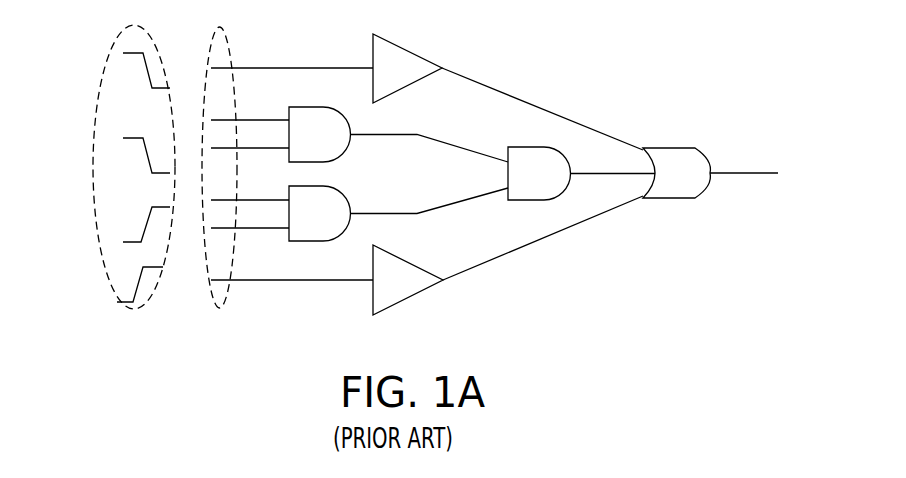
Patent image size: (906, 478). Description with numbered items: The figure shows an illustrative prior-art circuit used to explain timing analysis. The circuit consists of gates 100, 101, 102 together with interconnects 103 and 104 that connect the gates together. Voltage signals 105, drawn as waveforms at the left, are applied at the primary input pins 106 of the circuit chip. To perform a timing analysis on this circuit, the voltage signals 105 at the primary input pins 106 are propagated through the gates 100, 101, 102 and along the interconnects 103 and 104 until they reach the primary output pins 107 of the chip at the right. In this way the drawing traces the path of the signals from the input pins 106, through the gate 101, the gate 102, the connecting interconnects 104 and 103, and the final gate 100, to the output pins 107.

The gate 100 is at (703, 150).
The gate 101 is at (418, 56).
The gate 102 is at (343, 195).
The interconnect 103 is at (557, 232).
The interconnect 104 is at (563, 117).
The voltage signals 105 is at (104, 266).
The primary input pins 106 is at (213, 300).
The primary output pins 107 is at (763, 173).